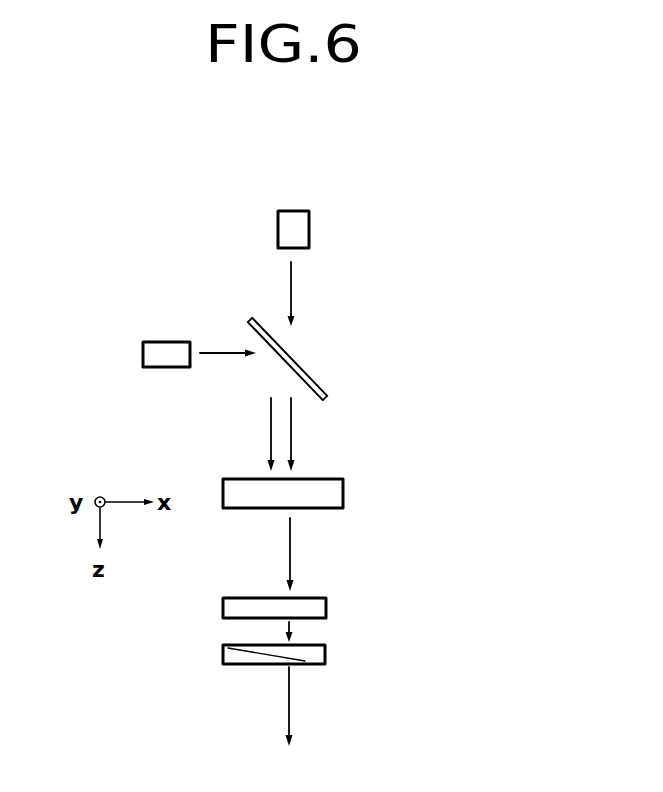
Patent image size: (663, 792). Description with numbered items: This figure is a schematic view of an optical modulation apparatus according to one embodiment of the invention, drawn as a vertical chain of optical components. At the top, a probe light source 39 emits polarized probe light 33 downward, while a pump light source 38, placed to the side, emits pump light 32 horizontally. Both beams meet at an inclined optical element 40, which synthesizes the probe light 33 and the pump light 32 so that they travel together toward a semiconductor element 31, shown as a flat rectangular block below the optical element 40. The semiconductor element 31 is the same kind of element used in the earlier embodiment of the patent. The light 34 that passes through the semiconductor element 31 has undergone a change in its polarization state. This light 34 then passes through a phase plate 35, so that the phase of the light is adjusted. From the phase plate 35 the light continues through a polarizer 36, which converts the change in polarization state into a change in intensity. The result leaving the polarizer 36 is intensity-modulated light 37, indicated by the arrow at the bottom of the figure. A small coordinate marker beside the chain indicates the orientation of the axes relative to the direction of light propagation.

The semiconductor element 31 is at (343, 493).
The pump light 32 is at (271, 418).
The probe light 33 is at (291, 422).
The light 34 is at (290, 551).
The phase plate 35 is at (326, 608).
The polarizer 36 is at (325, 654).
The intensity-modulated light 37 is at (289, 711).
The pump light source 38 is at (161, 368).
The probe light source 39 is at (310, 234).
The optical element 40 is at (292, 358).